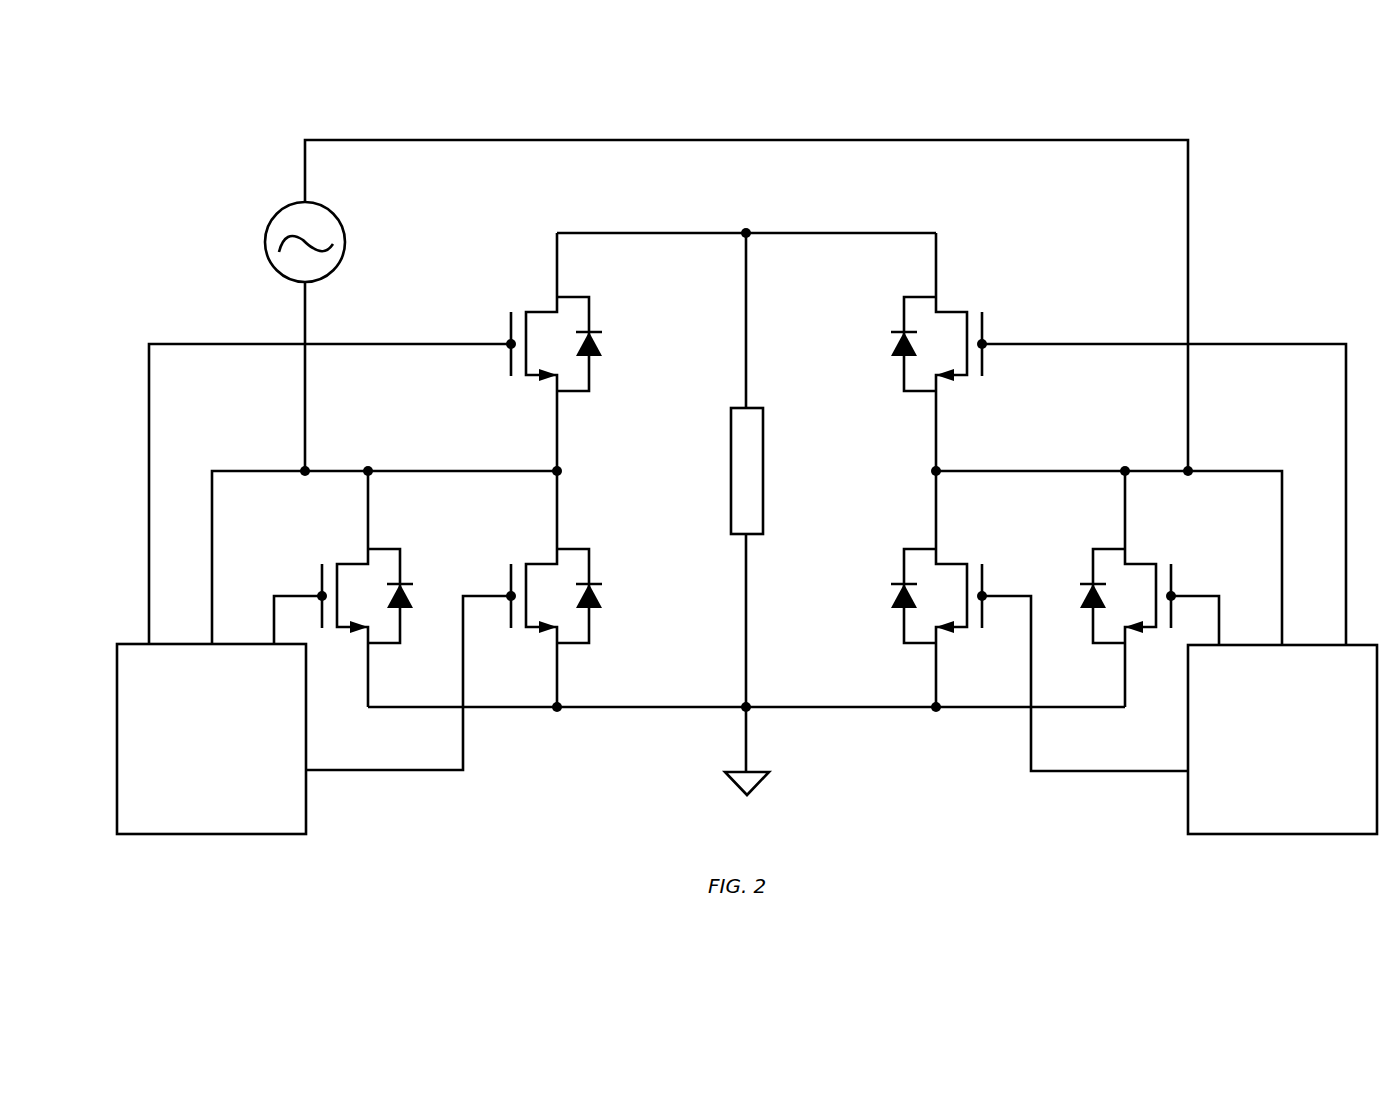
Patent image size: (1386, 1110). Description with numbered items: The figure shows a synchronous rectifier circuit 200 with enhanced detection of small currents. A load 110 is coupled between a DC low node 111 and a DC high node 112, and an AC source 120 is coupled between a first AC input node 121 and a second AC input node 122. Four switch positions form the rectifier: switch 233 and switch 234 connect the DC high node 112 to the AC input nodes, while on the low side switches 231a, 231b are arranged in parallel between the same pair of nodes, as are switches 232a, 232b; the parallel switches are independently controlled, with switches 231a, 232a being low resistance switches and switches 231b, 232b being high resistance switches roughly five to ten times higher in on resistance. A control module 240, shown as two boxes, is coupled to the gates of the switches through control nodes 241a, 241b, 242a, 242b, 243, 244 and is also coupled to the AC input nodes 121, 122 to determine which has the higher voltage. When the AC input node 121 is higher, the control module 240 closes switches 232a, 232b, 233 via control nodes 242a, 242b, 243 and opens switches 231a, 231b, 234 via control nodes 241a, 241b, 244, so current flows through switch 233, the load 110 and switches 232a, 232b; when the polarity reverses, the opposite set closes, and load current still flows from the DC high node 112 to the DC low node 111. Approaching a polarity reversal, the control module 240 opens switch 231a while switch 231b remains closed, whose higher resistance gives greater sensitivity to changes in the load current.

The synchronous rectifier circuit 200 is at (201, 69).
The AC source 120 is at (276, 201).
The DC high node 112 is at (734, 216).
The load 110 is at (734, 389).
The DC low node 111 is at (734, 689).
The AC input node 121 is at (466, 453).
The AC input node 122 is at (1096, 453).
The switch 233 is at (546, 281).
The switch 234 is at (924, 281).
The switch 231a is at (356, 532).
The switch 231b is at (543, 532).
The switch 232a is at (923, 532).
The switch 232b is at (1111, 532).
The control node 243 is at (248, 326).
The control node 244 is at (1317, 326).
The control node 241a is at (307, 578).
The control node 241b is at (436, 754).
The control node 242a is at (1159, 754).
The control node 242b is at (1185, 578).
The control module 240 is at (747, 739).